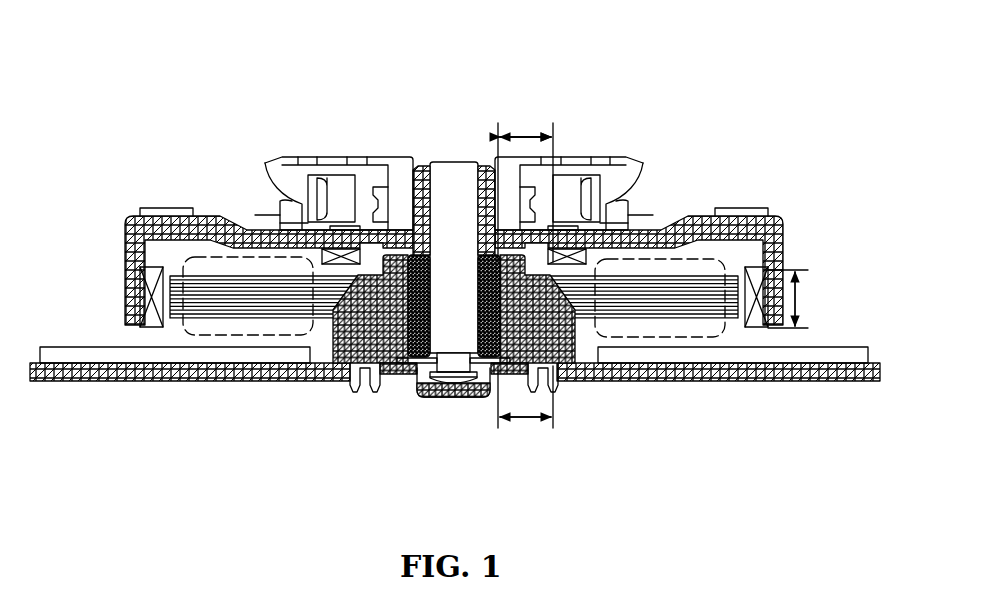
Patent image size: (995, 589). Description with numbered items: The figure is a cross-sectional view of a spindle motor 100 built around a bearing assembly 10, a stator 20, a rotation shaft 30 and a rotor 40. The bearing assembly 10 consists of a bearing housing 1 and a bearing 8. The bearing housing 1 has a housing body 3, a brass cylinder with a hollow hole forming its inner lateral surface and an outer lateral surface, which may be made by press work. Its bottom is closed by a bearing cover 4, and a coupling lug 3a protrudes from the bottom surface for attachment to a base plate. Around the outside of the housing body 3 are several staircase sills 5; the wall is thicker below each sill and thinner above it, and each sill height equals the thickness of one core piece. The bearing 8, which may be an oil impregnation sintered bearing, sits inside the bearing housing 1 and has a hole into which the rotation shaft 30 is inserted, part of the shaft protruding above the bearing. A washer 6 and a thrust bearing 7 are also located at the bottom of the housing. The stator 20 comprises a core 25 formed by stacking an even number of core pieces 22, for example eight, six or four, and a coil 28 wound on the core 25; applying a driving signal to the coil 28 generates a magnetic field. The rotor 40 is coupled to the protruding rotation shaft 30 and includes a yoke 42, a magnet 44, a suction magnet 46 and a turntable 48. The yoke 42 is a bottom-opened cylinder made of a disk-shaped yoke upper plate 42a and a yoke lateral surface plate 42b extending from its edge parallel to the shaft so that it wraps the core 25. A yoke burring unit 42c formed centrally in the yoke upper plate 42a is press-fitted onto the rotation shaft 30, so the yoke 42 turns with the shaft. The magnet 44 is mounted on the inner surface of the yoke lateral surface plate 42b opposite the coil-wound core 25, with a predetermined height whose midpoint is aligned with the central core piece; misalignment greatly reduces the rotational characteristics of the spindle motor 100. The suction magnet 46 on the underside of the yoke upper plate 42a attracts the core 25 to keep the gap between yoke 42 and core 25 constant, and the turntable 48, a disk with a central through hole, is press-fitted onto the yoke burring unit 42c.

The spindle motor 100 is at (553, 86).
The bearing housing 1 is at (333, 343).
The housing body 3 is at (433, 362).
The coupling lug 3a is at (380, 386).
The bearing cover 4 is at (473, 394).
The staircase sills 5 is at (345, 307).
The washer 6 is at (427, 385).
The thrust bearing 7 is at (453, 385).
The bearing 8 is at (421, 348).
The bearing assembly 10 is at (426, 383).
The stator 20 is at (491, 360).
The core pieces 22 is at (660, 314).
The core 25 is at (691, 307).
The coil 28 is at (710, 261).
The rotation shaft 30 is at (451, 191).
The rotor 40 is at (466, 214).
The yoke 42 is at (419, 214).
The yoke upper plate 42a is at (203, 218).
The yoke lateral surface plate 42b is at (128, 268).
The yoke burring unit 42c is at (422, 176).
The magnet 44 is at (760, 270).
The suction magnet 46 is at (340, 249).
The turntable 48 is at (601, 157).